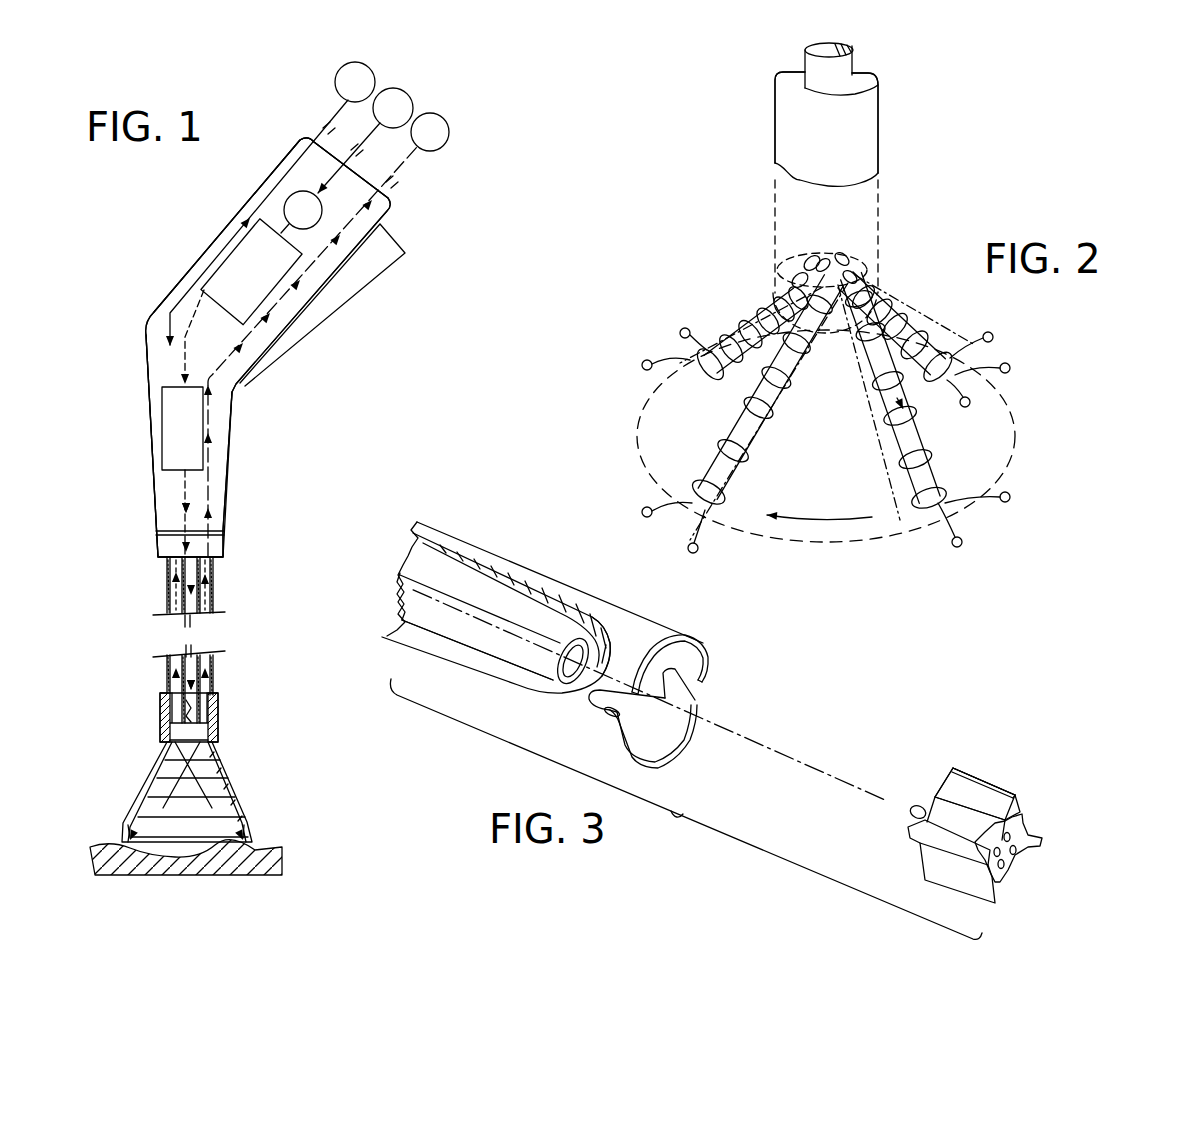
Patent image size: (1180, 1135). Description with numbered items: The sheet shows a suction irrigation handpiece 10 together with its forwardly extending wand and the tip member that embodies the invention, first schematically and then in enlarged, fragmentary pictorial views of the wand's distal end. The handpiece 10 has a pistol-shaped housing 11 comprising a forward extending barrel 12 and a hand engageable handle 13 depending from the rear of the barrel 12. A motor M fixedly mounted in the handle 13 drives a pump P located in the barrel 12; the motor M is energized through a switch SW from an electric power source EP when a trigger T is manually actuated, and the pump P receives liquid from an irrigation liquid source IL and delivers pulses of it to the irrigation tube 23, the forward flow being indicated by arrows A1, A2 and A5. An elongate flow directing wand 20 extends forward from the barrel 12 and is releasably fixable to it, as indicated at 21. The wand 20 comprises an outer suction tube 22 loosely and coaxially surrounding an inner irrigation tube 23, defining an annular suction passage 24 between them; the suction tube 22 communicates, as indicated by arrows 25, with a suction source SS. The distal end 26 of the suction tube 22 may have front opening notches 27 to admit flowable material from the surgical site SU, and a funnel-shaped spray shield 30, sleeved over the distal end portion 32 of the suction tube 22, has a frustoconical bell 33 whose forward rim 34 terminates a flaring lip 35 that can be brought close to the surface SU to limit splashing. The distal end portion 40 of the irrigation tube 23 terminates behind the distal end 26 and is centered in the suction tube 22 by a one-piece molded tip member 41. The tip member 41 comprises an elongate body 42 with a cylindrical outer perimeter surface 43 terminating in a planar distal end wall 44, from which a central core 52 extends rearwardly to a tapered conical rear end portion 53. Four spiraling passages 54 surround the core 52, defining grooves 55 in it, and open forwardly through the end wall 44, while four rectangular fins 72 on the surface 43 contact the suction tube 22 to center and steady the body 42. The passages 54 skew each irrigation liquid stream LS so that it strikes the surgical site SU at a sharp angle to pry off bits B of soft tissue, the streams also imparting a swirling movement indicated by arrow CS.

In FIG. 1, the handpiece 10 is at (160, 233).
In FIG. 1, the housing 11 is at (150, 318).
In FIG. 1, the barrel 12 is at (150, 467).
In FIG. 1, the handle 13 is at (276, 176).
In FIG. 1, the trigger T is at (385, 272).
In FIG. 1, the irrigation liquid source IL is at (270, 204).
In FIG. 1, the electric power source EP is at (364, 142).
In FIG. 1, the suction source SS is at (417, 150).
In FIG. 1, the switch SW is at (303, 212).
In FIG. 1, the motor M is at (241, 301).
In FIG. 1, the pump P is at (182, 471).
In FIG. 1, the arrows 25 is at (255, 328).
In FIG. 1, the arrow A1 is at (187, 500).
In FIG. 1, the arrow A2 is at (187, 672).
In FIG. 1, the arrows A5 is at (237, 793).
In FIG. 2, the arrows A5 is at (897, 398).
In FIG. 1, the releasable fixing 21 is at (162, 533).
In FIG. 1, the flow directing wand 20 is at (160, 583).
In FIG. 2, the flow directing wand 20 is at (887, 150).
In FIG. 3, the flow directing wand 20 is at (563, 572).
In FIG. 1, the suction tube 22 is at (163, 590).
In FIG. 2, the suction tube 22 is at (867, 115).
In FIG. 3, the suction tube 22 is at (493, 555).
In FIG. 1, the irrigation tube 23 is at (165, 563).
In FIG. 2, the irrigation tube 23 is at (845, 62).
In FIG. 3, the irrigation tube 23 is at (433, 585).
In FIG. 1, the annular suction passage 24 is at (187, 620).
In FIG. 2, the annular suction passage 24 is at (873, 74).
In FIG. 3, the annular suction passage 24 is at (470, 658).
In FIG. 1, the tip member 41 is at (210, 693).
In FIG. 3, the tip member 41 is at (1007, 745).
In FIG. 1, the spray shield 30 is at (230, 760).
In FIG. 1, the bell 33 is at (228, 777).
In FIG. 1, the forward rim 34 is at (253, 823).
In FIG. 1, the lip 35 is at (257, 837).
In FIG. 1, the surgical site surface SU is at (102, 837).
In FIG. 2, the surgical site surface SU is at (982, 437).
In FIG. 2, the passages 54 is at (833, 260).
In FIG. 3, the passages 54 is at (1038, 852).
In FIG. 2, the irrigation liquid stream LS is at (903, 323).
In FIG. 2, the bits of soft tissue B is at (990, 337).
In FIG. 2, the arrow CS is at (819, 503).
In FIG. 3, the distal end portion 40 is at (583, 645).
In FIG. 3, the distal end portion 32 is at (647, 637).
In FIG. 3, the distal end 26 is at (703, 653).
In FIG. 3, the notches 27 is at (600, 712).
In FIG. 3, the outer perimeter surface 43 is at (980, 808).
In FIG. 3, the grooves 55 is at (957, 808).
In FIG. 3, the body 42 is at (1003, 803).
In FIG. 3, the fins 72 is at (1017, 793).
In FIG. 3, the distal end wall 44 is at (1035, 822).
In FIG. 3, the conical rear end portion 53 is at (923, 808).
In FIG. 3, the core 52 is at (923, 788).